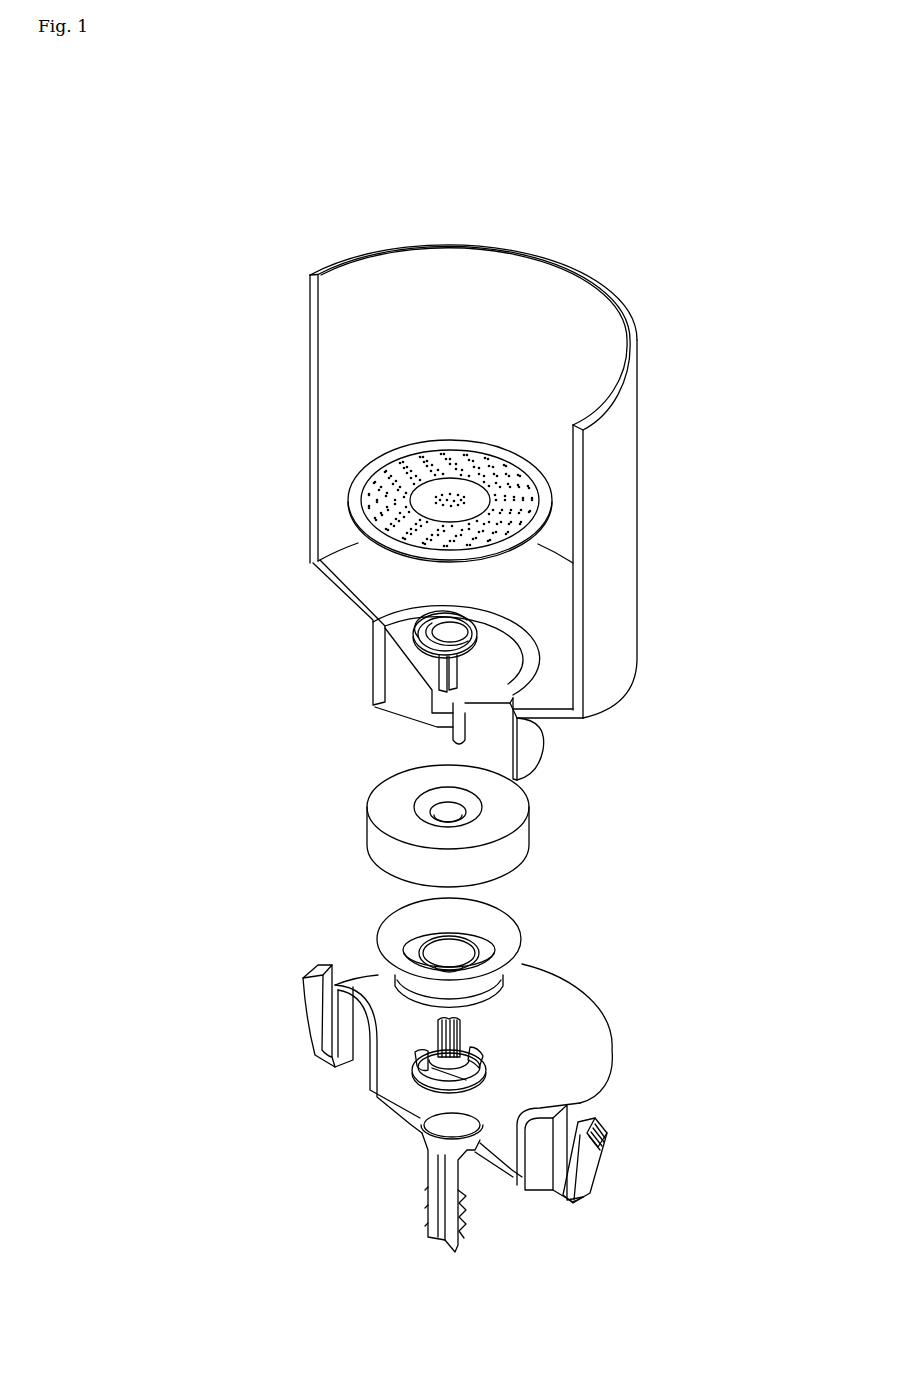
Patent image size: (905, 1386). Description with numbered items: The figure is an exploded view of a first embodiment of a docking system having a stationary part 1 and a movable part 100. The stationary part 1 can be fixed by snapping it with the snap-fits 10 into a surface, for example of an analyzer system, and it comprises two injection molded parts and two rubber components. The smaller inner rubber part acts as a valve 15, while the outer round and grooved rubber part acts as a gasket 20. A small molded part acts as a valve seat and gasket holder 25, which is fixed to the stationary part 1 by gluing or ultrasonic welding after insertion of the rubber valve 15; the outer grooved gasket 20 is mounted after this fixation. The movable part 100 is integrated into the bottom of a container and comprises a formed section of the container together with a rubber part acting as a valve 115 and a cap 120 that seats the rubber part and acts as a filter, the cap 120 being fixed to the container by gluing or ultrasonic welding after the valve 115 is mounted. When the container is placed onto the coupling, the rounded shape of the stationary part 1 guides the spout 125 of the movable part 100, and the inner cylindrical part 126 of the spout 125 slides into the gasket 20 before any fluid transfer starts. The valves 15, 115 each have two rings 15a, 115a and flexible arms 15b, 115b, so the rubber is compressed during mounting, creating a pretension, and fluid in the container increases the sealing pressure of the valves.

The stationary part 1 is at (614, 1053).
The snap-fits 10 is at (307, 1031).
The valve 15 is at (421, 1078).
The rings 15a is at (473, 1060).
The flexible arms 15b is at (414, 1064).
The gasket 20 is at (524, 863).
The valve seat and gasket holder 25 is at (524, 963).
The movable part 100 is at (640, 500).
The valve 115 is at (424, 650).
The rings 115a is at (468, 664).
The flexible arms 115b is at (487, 628).
The cap 120 is at (346, 512).
The spout 125 is at (546, 757).
The inner cylindrical part 126 is at (432, 730).